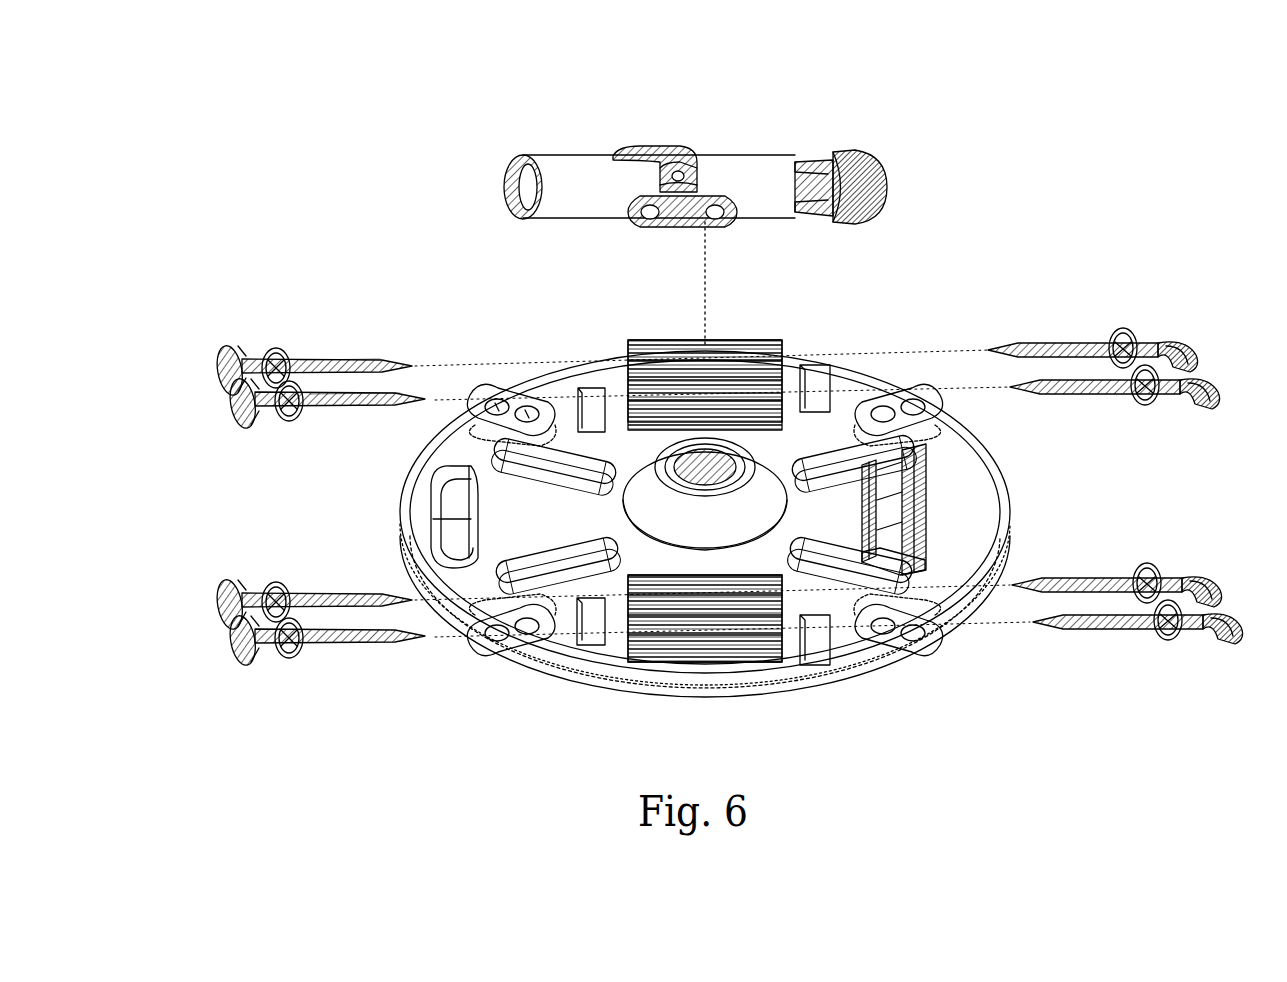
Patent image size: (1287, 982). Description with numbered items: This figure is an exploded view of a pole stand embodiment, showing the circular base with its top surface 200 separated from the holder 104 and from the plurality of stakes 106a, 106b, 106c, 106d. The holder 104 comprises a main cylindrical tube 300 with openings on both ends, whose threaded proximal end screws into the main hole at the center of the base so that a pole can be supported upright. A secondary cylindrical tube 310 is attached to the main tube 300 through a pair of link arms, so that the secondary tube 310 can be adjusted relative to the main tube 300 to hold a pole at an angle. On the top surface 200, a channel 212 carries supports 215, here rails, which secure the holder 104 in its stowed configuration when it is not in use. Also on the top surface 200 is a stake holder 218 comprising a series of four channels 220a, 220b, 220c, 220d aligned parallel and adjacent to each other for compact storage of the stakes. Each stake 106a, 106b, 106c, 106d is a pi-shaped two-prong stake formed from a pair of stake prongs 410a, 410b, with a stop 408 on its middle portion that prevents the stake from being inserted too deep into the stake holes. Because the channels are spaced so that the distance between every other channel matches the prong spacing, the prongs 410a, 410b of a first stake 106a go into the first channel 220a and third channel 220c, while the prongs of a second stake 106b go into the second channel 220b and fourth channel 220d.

The holder 104 is at (498, 100).
The top surface 200 is at (503, 527).
The channel 212 is at (930, 483).
The supports 215 is at (960, 450).
The stake holder 218 is at (708, 655).
The first channel 220a is at (620, 638).
The second channel 220b is at (790, 632).
The third channel 220c is at (613, 598).
The fourth channel 220d is at (785, 590).
The main cylindrical tube 300 is at (752, 150).
The secondary cylindrical tube 310 is at (565, 152).
The stake 106a is at (230, 395).
The stake 106b is at (1190, 355).
The stake 106c is at (232, 628).
The stake 106d is at (1215, 600).
The stop 408 is at (283, 345).
The stake prong 410a is at (365, 356).
The stake prong 410b is at (355, 412).